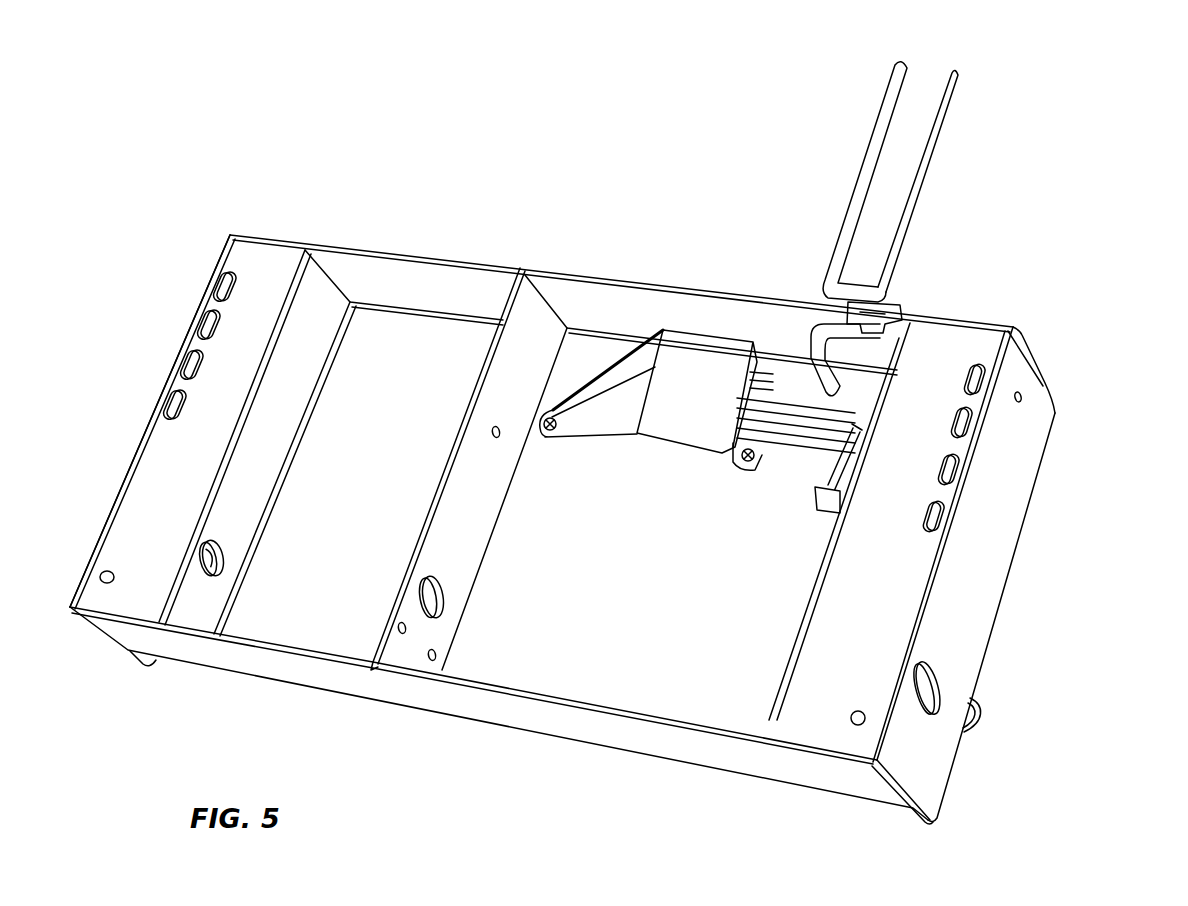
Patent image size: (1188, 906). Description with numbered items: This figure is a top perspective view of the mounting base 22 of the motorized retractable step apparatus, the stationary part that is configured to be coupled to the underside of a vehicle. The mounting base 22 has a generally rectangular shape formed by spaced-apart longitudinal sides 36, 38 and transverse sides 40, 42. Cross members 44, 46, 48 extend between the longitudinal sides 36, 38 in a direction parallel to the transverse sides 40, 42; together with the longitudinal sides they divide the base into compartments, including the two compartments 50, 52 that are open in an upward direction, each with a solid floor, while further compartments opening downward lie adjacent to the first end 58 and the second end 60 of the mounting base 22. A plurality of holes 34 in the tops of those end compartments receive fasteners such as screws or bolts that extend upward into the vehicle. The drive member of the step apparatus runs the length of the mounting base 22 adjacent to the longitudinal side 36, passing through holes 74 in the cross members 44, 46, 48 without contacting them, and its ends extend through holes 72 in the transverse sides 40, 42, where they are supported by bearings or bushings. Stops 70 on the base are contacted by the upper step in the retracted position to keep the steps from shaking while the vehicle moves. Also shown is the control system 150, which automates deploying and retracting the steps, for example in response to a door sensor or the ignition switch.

The mounting base 22 is at (1033, 455).
The holes 34 is at (198, 364).
The longitudinal side 36 is at (493, 713).
The longitudinal side 38 is at (604, 307).
The transverse side 40 is at (990, 596).
The transverse side 42 is at (137, 667).
The cross member 44 is at (820, 569).
The cross member 46 is at (490, 492).
The cross member 48 is at (310, 390).
The compartment 50 is at (690, 478).
The compartment 52 is at (410, 290).
The first end 58 is at (1064, 556).
The second end 60 is at (142, 334).
The stops 70 is at (977, 719).
The holes 72 is at (937, 677).
The holes 74 is at (224, 557).
The control system 150 is at (663, 424).